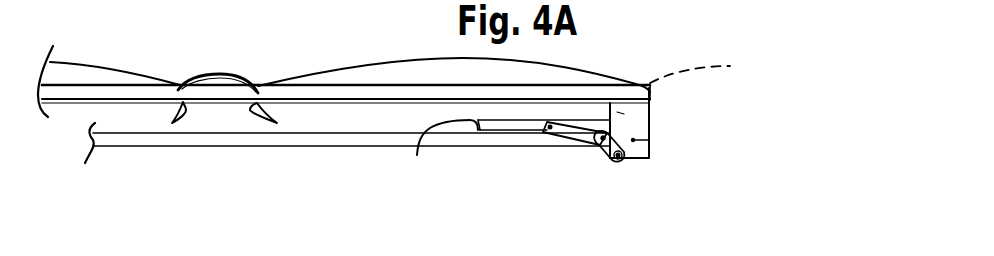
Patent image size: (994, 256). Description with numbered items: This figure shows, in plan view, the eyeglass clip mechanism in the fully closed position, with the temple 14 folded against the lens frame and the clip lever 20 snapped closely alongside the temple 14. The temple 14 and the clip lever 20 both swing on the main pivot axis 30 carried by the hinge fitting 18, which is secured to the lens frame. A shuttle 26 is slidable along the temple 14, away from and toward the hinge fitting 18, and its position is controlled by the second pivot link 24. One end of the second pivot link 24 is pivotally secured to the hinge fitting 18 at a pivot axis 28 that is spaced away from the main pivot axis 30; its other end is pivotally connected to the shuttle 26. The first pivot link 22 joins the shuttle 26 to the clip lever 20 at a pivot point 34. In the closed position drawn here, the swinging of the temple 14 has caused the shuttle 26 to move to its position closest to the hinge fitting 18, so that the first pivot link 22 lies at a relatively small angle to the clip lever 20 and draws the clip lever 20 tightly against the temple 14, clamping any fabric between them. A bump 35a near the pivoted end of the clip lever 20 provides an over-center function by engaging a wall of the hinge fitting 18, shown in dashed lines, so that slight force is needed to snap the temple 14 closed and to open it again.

The temple 14 is at (277, 142).
The hinge fitting 18 is at (650, 127).
The clip lever 20 is at (417, 155).
The first pivot link 22 is at (565, 136).
The second pivot link 24 is at (602, 162).
The shuttle 26 is at (580, 150).
The pivot axis 28 is at (650, 158).
The main pivot axis 30 is at (650, 140).
The pivot point 34 is at (547, 128).
The bump 35a is at (718, 63).